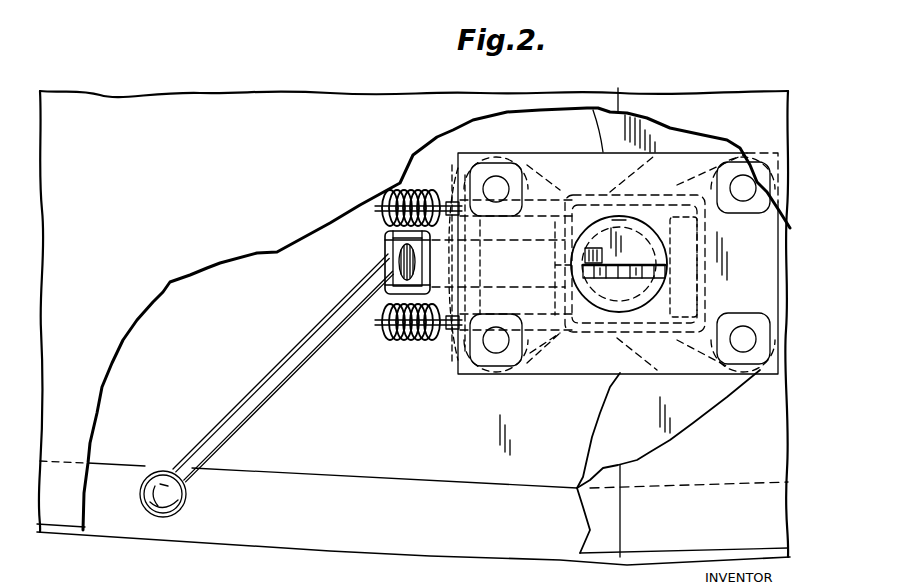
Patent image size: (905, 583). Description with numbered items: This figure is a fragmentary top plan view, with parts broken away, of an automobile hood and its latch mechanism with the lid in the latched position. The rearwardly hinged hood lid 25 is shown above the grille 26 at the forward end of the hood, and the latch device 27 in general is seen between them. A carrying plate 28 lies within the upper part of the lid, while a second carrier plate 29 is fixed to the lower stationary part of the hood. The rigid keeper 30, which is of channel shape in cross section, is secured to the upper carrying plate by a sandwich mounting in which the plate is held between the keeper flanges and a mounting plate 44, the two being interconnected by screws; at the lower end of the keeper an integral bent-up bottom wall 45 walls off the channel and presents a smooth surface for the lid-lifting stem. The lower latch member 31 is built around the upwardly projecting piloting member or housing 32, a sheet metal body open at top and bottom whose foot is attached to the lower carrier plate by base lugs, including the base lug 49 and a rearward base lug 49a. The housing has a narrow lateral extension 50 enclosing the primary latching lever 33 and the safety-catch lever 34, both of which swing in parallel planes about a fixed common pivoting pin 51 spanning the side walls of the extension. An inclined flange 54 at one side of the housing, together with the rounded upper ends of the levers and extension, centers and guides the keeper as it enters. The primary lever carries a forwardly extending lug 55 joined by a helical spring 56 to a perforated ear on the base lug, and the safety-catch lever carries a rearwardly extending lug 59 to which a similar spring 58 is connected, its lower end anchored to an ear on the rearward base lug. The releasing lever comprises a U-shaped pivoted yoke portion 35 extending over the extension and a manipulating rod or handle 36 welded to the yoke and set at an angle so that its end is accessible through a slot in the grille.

The hood lid 25 is at (348, 108).
The grille 26 is at (346, 543).
The latch device 27 is at (693, 147).
The carrying plate 28 is at (610, 130).
The carrier plate 29 is at (531, 468).
The keeper 30 is at (652, 250).
The lower latch member 31 is at (597, 350).
The piloting member or housing 32 is at (633, 195).
The primary latching lever 33 is at (657, 278).
The safety-catch lever 34 is at (591, 244).
The yoke portion of releasing lever 35 is at (387, 255).
The manipulating rod or handle 36 is at (295, 355).
The mounting plate 44 is at (538, 162).
The bottom wall 45 is at (632, 292).
The base lug 49 is at (453, 358).
The rearward base lug 49a is at (458, 175).
The lateral extension 50 is at (510, 191).
The pivoting pin 51 is at (510, 337).
The inclined flange 54 is at (720, 244).
The lug 55 is at (442, 346).
The helical spring 56 is at (392, 340).
The spring 58 is at (397, 192).
The lug 59 is at (447, 200).